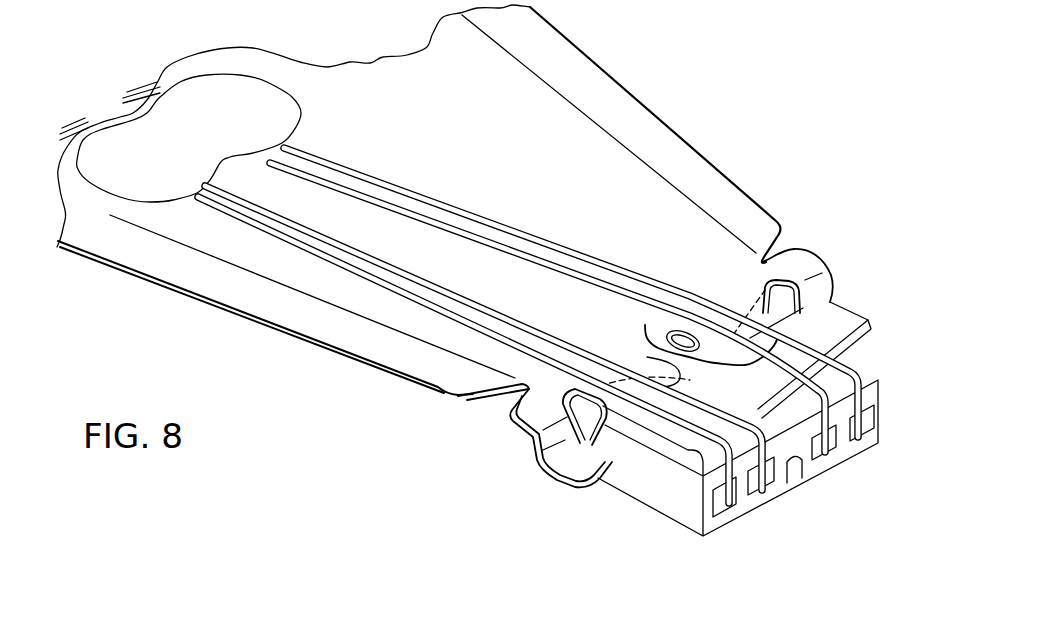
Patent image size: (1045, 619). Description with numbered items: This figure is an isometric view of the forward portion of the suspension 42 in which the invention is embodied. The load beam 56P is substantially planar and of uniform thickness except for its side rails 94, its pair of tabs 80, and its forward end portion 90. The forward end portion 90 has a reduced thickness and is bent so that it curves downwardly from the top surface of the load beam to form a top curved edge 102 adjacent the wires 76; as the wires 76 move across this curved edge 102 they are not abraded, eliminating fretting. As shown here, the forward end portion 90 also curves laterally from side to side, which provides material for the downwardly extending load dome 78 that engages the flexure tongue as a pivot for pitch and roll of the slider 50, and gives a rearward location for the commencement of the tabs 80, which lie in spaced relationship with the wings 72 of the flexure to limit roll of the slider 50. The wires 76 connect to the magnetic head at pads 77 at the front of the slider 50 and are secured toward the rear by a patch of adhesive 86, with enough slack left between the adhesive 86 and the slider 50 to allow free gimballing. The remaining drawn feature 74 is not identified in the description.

The suspension 42 is at (476, 292).
The slider 50 is at (637, 496).
The load beam 56P is at (380, 63).
The wings 72 is at (612, 447).
The housing opening 74 is at (803, 482).
The wires 76 is at (700, 456).
The pads 77 is at (762, 482).
The load dome 78 is at (664, 341).
The tabs 80 is at (557, 481).
The patch of adhesive 86 is at (300, 115).
The forward end portion 90 is at (668, 362).
The side rails 94 is at (700, 157).
The top curved edge 102 is at (750, 325).